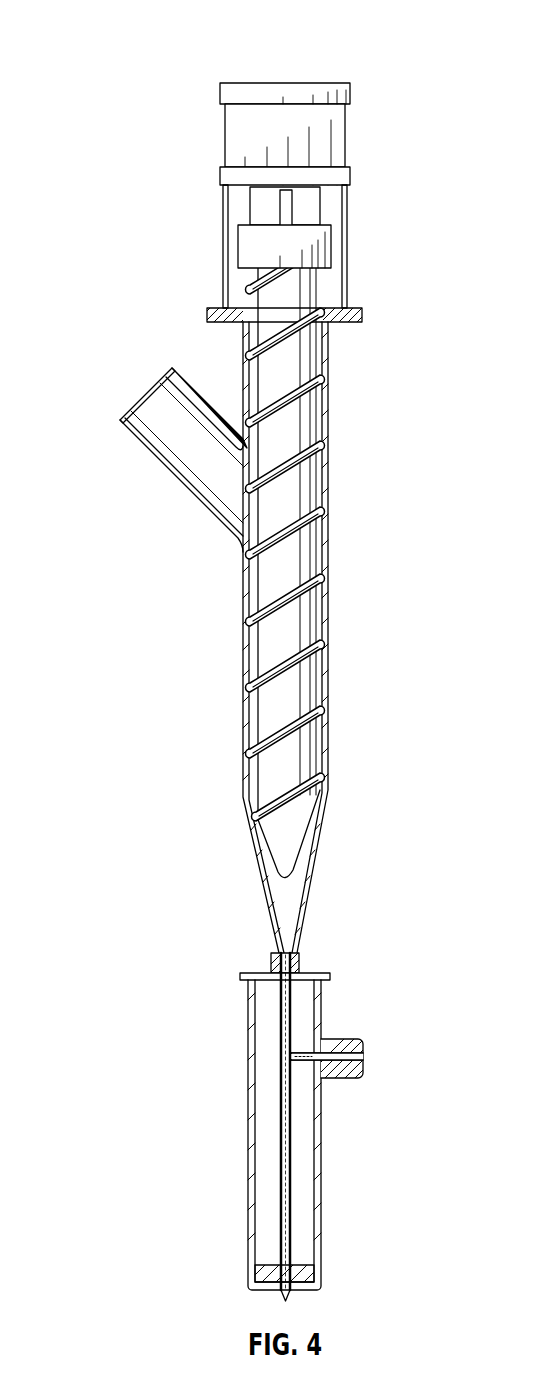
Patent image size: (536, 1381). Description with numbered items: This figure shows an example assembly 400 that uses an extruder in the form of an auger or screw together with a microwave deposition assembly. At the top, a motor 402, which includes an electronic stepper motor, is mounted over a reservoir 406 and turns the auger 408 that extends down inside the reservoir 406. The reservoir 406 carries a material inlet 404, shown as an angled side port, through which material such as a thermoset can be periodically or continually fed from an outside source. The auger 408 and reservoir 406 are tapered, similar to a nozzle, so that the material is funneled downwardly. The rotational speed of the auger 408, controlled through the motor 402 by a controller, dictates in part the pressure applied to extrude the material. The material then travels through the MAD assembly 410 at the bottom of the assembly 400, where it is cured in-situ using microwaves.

The assembly 400 is at (240, 34).
The motor 402 is at (347, 135).
The material inlet 404 is at (162, 412).
The reservoir 406 is at (330, 417).
The auger 408 is at (295, 620).
The MAD assembly 410 is at (325, 1010).